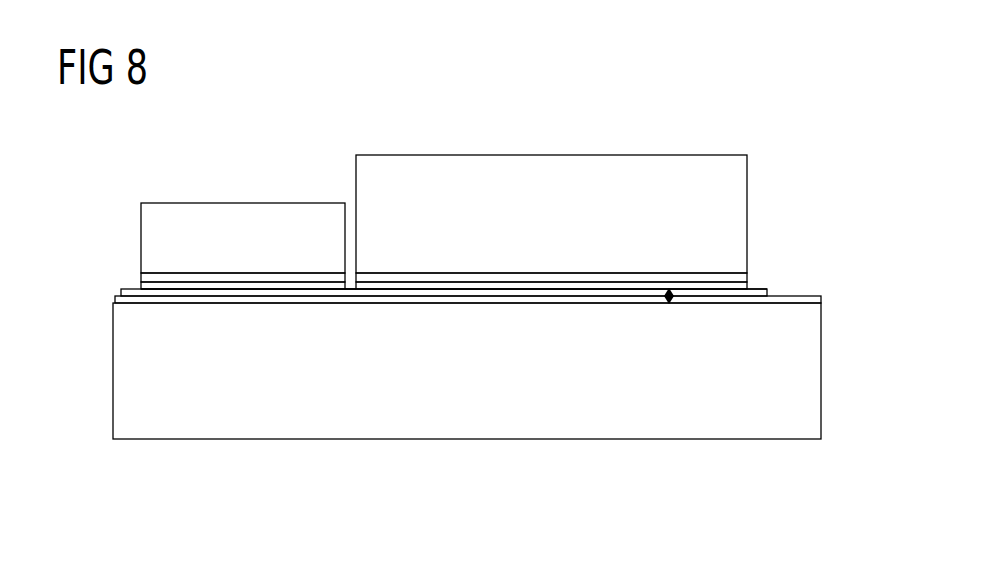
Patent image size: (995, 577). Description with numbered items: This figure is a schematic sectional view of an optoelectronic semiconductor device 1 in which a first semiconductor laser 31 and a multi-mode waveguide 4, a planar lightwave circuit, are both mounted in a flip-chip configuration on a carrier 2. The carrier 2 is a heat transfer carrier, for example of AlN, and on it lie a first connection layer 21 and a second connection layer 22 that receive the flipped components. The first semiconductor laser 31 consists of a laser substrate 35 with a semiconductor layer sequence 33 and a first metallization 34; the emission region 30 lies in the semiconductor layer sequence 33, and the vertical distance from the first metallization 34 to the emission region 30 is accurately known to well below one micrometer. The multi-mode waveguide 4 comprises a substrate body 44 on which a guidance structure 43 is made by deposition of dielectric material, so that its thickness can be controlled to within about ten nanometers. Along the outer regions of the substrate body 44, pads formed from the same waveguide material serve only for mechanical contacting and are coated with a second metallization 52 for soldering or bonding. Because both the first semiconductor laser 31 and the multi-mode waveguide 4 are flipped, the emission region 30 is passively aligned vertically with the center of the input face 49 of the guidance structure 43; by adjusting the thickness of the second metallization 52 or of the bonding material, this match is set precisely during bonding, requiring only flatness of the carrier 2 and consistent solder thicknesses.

The optoelectronic semiconductor device 1 is at (770, 109).
The carrier 2 is at (449, 411).
The first connection layer 21 is at (115, 298).
The second connection layer 22 is at (121, 291).
The emission region 30 is at (341, 285).
The first semiconductor laser 31 is at (215, 194).
The semiconductor layer sequence 33 is at (187, 276).
The first metallization 34 is at (244, 288).
The laser substrate 35 is at (141, 240).
The multi-mode waveguide (PLC) 4 is at (600, 222).
The guidance structure 43 is at (747, 279).
The substrate body 44 is at (747, 235).
The input face 49 is at (362, 280).
The second metallization 52 is at (668, 305).